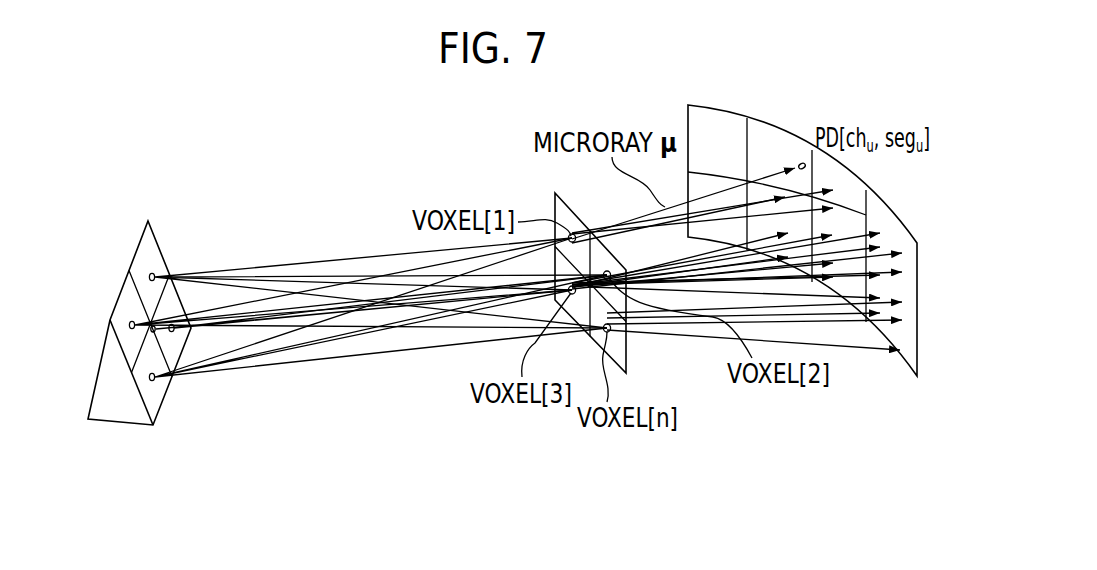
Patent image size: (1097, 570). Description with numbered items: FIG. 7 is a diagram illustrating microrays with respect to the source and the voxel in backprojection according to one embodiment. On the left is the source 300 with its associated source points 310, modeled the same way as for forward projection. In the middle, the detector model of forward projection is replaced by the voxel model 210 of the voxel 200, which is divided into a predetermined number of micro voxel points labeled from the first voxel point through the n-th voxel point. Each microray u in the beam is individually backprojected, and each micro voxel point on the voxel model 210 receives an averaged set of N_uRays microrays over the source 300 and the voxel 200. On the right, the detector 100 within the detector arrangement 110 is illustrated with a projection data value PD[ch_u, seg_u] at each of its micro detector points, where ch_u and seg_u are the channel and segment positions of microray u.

The detector 100 is at (783, 128).
The detector unit 110 is at (747, 74).
The voxel 200 is at (627, 355).
The voxel model 210 is at (537, 188).
The source 300 is at (107, 424).
The light source 310 is at (168, 219).